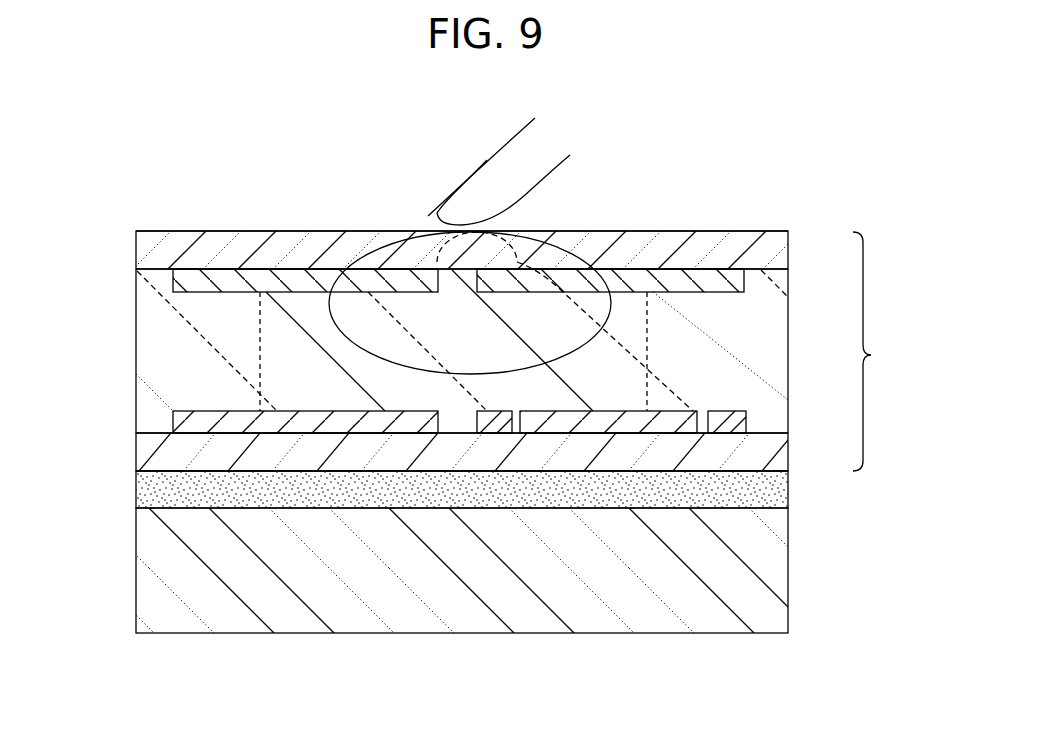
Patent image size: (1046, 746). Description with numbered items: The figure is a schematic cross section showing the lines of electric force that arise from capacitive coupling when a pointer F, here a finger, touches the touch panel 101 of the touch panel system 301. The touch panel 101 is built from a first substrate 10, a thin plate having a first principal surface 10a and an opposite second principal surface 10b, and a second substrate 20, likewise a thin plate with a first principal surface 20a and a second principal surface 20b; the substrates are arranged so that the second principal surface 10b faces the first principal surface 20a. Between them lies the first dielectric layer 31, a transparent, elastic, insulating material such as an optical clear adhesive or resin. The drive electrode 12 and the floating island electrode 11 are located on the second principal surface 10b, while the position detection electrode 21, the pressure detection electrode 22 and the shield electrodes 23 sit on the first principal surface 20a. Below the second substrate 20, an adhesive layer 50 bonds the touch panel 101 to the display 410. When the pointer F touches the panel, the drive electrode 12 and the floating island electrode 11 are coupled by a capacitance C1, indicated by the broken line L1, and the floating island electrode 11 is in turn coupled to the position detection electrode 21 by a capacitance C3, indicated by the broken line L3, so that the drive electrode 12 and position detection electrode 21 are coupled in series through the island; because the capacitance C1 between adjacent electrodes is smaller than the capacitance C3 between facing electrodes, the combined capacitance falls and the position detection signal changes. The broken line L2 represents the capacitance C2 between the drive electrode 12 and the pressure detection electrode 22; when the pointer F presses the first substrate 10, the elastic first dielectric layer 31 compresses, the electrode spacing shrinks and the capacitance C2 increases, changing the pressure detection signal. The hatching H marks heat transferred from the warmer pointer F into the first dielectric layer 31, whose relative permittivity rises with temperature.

The first substrate 10 is at (773, 249).
The first principal surface 10a is at (171, 231).
The second principal surface 10b is at (148, 271).
The floating island electrode 11 is at (298, 283).
The drive electrode 12 is at (648, 284).
The second substrate 20 is at (773, 462).
The first principal surface 20a is at (147, 433).
The second principal surface 20b is at (170, 471).
The position detection electrode 21 is at (315, 425).
The pressure detection electrode 22 is at (608, 427).
The shield electrode 23 is at (500, 427).
The first dielectric layer 31 is at (773, 351).
The adhesive layer 50 is at (773, 493).
The display 410 is at (773, 575).
The touch panel 101 is at (905, 351).
The touch panel system 301 is at (905, 351).
The pointer F is at (492, 165).
The hatching H is at (608, 230).
The broken line L1 is at (432, 253).
The broken line L2 is at (650, 336).
The broken line L3 is at (257, 336).
The capacitance C1 is at (542, 285).
The capacitance C2 is at (670, 292).
The capacitance C3 is at (260, 292).